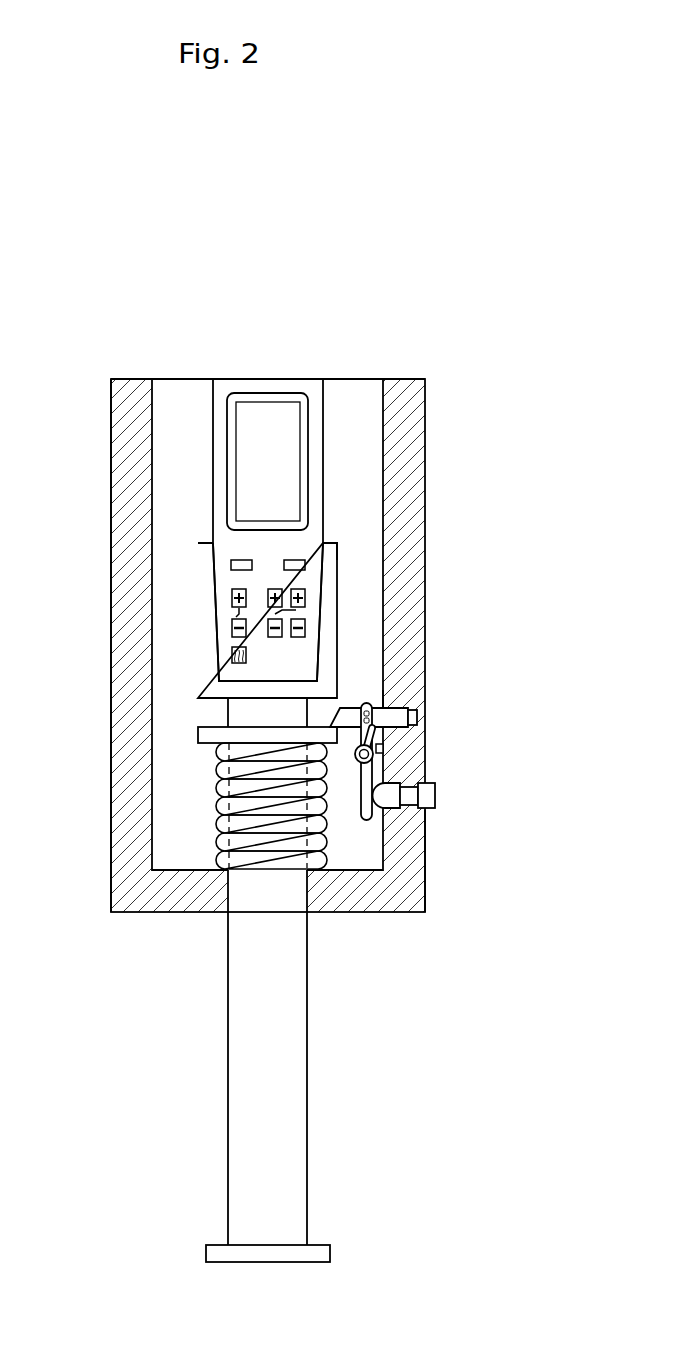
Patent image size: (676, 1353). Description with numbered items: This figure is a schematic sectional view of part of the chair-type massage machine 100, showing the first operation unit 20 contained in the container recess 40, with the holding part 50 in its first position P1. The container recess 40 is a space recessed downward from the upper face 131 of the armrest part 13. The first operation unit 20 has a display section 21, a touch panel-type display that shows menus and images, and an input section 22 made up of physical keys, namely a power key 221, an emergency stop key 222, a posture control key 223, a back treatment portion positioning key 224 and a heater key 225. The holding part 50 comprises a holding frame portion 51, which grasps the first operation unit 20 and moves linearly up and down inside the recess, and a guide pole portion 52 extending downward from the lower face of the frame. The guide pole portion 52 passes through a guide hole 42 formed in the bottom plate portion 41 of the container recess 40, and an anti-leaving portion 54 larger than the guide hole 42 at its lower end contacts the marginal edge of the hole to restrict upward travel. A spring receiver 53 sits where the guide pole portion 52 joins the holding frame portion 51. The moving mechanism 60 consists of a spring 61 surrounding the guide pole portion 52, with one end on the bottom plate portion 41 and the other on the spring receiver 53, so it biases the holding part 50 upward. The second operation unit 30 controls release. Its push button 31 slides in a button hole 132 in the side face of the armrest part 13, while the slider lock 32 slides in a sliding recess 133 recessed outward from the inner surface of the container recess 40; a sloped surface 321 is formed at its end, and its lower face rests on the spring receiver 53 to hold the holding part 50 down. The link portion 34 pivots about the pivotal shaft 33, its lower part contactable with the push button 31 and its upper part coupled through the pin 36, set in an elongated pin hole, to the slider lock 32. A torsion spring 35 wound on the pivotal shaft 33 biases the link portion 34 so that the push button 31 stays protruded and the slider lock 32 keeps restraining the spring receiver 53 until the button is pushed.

The chair-type massage machine 100 is at (123, 250).
The armrest part 13 is at (130, 430).
The upper face 131 is at (133, 378).
The button hole 132 is at (420, 810).
The sliding recess 133 is at (410, 708).
The first operation unit 20 is at (291, 375).
The display section 21 is at (246, 398).
The input section 22 is at (222, 555).
The power key 221 is at (231, 565).
The emergency stop key 222 is at (297, 565).
The posture control key 223 is at (303, 607).
The back treatment portion positioning key 224 is at (232, 607).
The heater key 225 is at (233, 655).
The second operation unit 30 is at (430, 752).
The push button 31 is at (425, 797).
The slider lock 32 is at (410, 717).
The pivotal shaft 33 is at (383, 760).
The link portion 34 is at (365, 822).
The torsion spring 35 is at (388, 742).
The pin 36 is at (366, 703).
The container recess 40 is at (372, 383).
The bottom plate portion 41 is at (182, 869).
The guide hole 42 is at (229, 888).
The holding part 50 is at (187, 543).
The holding frame portion 51 is at (207, 686).
The guide pole portion 52 is at (240, 1077).
The spring receiver 53 is at (207, 738).
The anti-leaving portion 54 is at (218, 1252).
The moving mechanism 60 is at (198, 802).
The spring 61 is at (222, 838).
The sloped surface 321 is at (307, 712).
The first position P1 is at (333, 542).